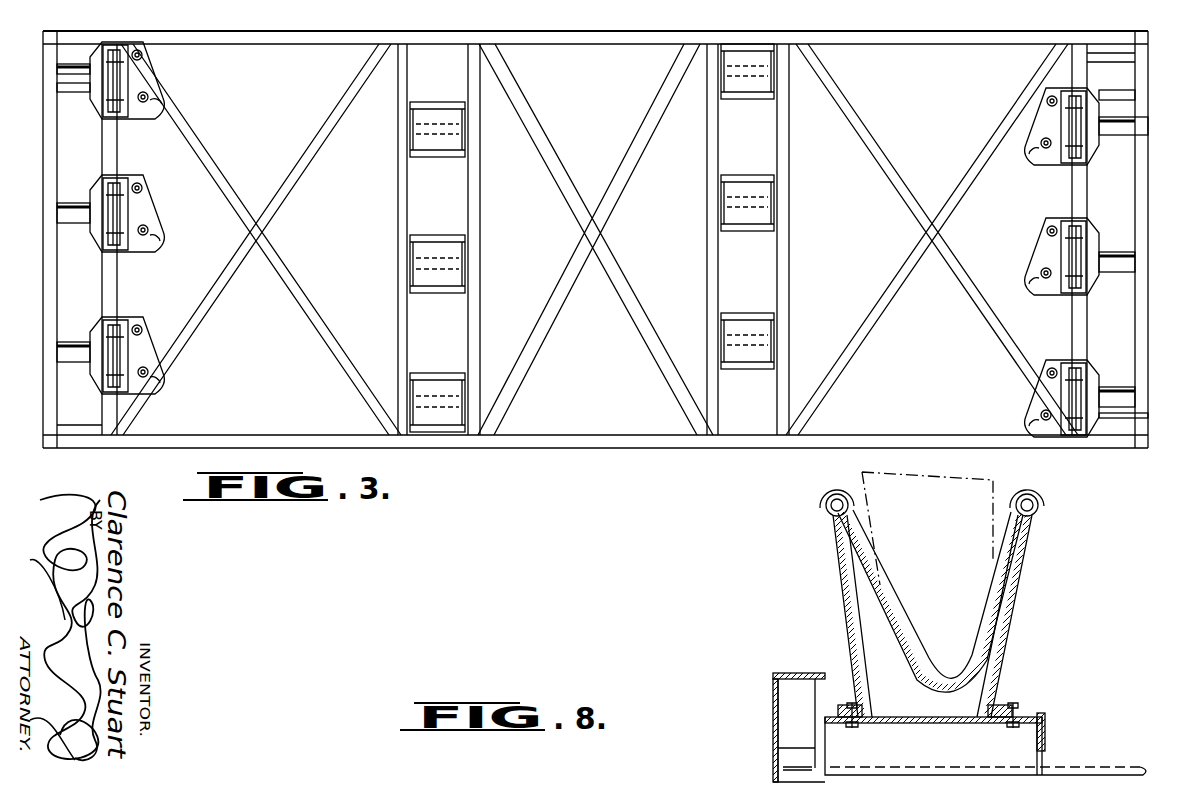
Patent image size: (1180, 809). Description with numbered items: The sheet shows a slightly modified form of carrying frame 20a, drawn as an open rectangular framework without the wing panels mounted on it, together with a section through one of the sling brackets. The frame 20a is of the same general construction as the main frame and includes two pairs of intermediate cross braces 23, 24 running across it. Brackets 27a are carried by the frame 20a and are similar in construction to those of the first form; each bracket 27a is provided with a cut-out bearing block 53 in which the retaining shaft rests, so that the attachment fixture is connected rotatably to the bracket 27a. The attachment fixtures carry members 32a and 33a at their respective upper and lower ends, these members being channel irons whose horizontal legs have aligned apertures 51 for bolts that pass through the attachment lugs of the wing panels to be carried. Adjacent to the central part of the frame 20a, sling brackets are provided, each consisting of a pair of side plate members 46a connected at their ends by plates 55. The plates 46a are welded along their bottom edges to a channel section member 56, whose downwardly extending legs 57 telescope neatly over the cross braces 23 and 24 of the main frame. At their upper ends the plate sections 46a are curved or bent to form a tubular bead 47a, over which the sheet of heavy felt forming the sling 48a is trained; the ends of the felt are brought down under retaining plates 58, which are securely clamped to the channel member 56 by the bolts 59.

In FIG. 3, the frame 20a is at (631, 447).
In FIG. 3, the cross brace 23 is at (477, 328).
In FIG. 3, the cross brace 24 is at (789, 277).
In FIG. 3, the bracket 27a is at (80, 93).
In FIG. 3, the member 32a is at (144, 72).
In FIG. 3, the member 33a is at (160, 98).
In FIG. 3, the side plate member 46a is at (448, 234).
In FIG. 8, the side plate member 46a is at (995, 661).
In FIG. 8, the tubular bead 47a is at (1041, 505).
In FIG. 8, the sling 48a is at (828, 497).
In FIG. 3, the aligned apertures 51 is at (151, 381).
In FIG. 3, the cut-out bearing block 53 is at (410, 259).
In FIG. 3, the plate 55 is at (475, 262).
In FIG. 8, the channel section member 56 is at (1045, 713).
In FIG. 8, the downwardly extending leg 57 is at (1046, 736).
In FIG. 8, the retaining plate 58 is at (841, 702).
In FIG. 8, the bolt 59 is at (990, 722).